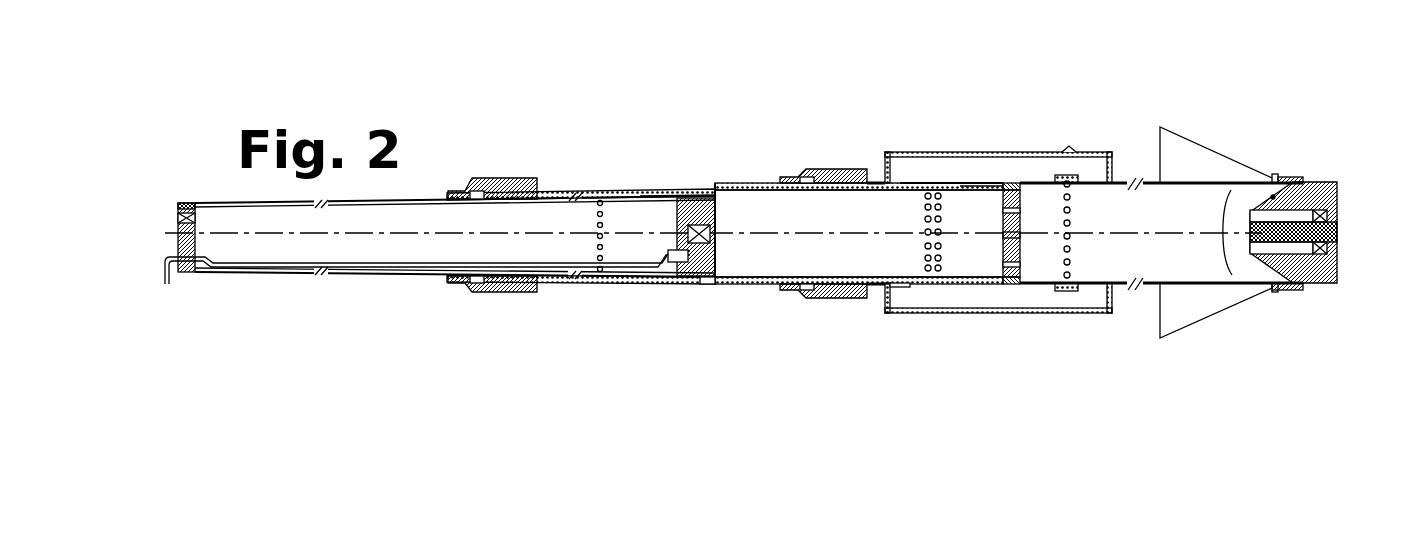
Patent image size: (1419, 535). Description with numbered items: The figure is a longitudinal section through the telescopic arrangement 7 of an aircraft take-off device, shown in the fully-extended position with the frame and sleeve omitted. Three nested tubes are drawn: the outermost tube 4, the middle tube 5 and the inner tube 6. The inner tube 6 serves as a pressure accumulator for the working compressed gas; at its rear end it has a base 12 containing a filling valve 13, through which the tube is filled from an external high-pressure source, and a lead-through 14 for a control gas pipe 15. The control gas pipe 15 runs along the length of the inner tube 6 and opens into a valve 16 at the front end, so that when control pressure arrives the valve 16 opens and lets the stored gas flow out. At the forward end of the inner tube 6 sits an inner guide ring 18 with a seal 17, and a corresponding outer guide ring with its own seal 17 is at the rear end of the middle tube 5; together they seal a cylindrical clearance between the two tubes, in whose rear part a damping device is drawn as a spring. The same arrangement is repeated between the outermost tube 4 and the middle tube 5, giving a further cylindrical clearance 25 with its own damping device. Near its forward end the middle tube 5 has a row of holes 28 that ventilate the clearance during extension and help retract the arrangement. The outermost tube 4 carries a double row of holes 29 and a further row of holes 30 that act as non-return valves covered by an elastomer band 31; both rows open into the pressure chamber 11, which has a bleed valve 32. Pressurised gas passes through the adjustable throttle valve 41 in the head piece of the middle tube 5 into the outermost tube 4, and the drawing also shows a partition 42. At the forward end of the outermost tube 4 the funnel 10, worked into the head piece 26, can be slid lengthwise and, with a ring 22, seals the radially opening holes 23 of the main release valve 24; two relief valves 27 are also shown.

The outermost tube 4 is at (1150, 290).
The middle tube 5 is at (760, 278).
The inner tube 6 is at (347, 273).
The telescopic arrangement 7 is at (585, 331).
The funnel 10 is at (1172, 138).
The pressure chamber 11 is at (903, 152).
The base 12 is at (184, 203).
The filling valve 13 is at (180, 205).
The lead-through 14 is at (183, 268).
The control gas pipe 15 is at (265, 258).
The valve 16 is at (720, 190).
The seal 17 is at (1010, 182).
The inner guide ring 18 is at (682, 192).
The ring 22 is at (1279, 192).
The holes 23 is at (1300, 178).
The main release valve 24 is at (1222, 232).
The cylindrical clearance 25 is at (947, 185).
The head piece 26 is at (1328, 285).
The relief valves 27 is at (1345, 230).
The holes 28 is at (605, 192).
The holes 29 is at (940, 268).
The holes 30 is at (1065, 250).
The elastomer band 31 is at (1063, 288).
The bleed valve 32 is at (1072, 148).
The throttle valve 41 is at (1000, 240).
The partition wall 42 is at (1010, 237).